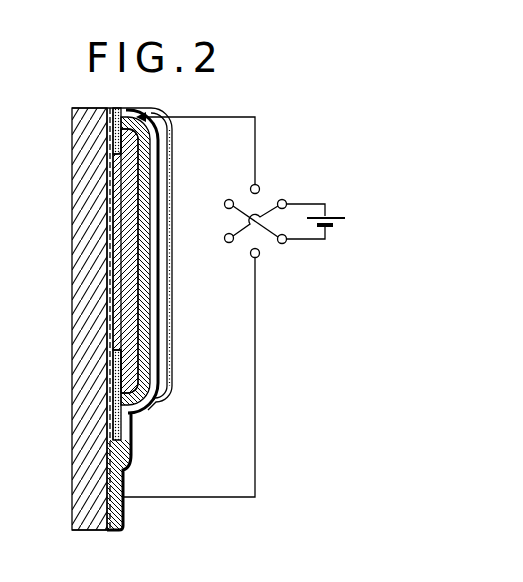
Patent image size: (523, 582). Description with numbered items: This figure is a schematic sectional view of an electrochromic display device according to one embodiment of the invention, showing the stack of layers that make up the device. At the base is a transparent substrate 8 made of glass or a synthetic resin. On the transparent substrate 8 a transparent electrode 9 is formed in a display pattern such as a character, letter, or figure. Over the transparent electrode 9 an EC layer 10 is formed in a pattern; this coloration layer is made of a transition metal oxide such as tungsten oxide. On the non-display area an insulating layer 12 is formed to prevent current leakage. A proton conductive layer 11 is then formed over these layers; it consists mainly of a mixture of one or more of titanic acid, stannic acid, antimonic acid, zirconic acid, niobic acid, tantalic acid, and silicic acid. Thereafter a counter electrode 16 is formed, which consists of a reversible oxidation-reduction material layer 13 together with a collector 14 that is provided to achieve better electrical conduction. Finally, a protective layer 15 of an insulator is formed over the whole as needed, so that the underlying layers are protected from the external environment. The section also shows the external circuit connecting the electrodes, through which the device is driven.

The transparent substrate 8 is at (92, 219).
The transparent electrode 9 is at (110, 326).
The EC layer 10 is at (118, 185).
The proton conductive layer 11 is at (135, 300).
The insulating layer 12 is at (108, 428).
The reversible oxidation-reduction material layer 13 is at (150, 366).
The collector 14 is at (160, 405).
The protective layer 15 is at (135, 418).
The counter electrode 16 is at (172, 186).